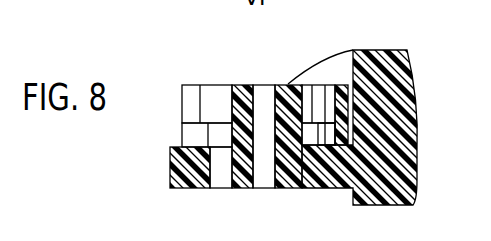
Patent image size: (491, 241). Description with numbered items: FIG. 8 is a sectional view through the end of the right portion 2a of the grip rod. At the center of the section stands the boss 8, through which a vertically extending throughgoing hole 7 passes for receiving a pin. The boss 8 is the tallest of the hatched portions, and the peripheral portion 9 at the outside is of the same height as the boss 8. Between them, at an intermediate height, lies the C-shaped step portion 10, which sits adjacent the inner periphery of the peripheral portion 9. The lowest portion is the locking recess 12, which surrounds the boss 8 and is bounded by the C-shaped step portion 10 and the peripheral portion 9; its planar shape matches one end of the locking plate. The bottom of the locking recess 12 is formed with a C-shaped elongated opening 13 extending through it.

The right portion of the grip rod 2a is at (372, 33).
The throughgoing hole 7 is at (268, 178).
The boss 8 is at (235, 85).
The peripheral portion 9 is at (343, 85).
The C-shaped step portion 10 is at (288, 84).
The locking recess 12 is at (192, 147).
The C-shaped elongated opening 13 is at (222, 178).